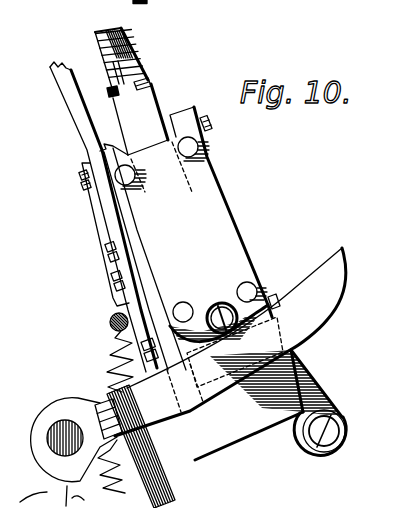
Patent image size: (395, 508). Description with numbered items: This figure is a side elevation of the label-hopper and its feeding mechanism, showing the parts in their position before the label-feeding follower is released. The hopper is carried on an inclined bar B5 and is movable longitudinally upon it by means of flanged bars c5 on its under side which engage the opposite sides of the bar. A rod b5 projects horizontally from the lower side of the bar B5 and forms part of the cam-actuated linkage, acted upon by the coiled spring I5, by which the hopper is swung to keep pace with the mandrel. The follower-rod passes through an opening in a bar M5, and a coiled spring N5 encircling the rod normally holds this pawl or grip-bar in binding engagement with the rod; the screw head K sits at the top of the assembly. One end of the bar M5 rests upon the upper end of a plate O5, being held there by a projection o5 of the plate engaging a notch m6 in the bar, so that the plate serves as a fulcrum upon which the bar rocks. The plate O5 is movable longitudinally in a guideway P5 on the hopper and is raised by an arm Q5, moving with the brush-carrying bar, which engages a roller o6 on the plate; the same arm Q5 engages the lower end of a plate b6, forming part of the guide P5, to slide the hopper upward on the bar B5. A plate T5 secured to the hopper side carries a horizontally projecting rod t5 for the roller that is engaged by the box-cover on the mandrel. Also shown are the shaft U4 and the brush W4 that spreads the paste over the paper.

The screw head K is at (100, 30).
The coiled spring N5 is at (127, 33).
The bar M5 is at (97, 98).
The projection o5 is at (130, 61).
The notch m6 is at (150, 81).
The plate O5 is at (158, 108).
The inclined bar B5 is at (84, 132).
The flanged bars c5 is at (109, 233).
The guideway P5 is at (205, 224).
The roller o6 is at (226, 300).
The plate b6 is at (271, 300).
The arm Q5 is at (330, 291).
The plate T5 is at (325, 405).
The rod t5 is at (343, 418).
The rod b5 is at (109, 323).
The coiled spring I5 is at (110, 358).
The shaft U4 is at (59, 418).
The brush W4 is at (150, 480).